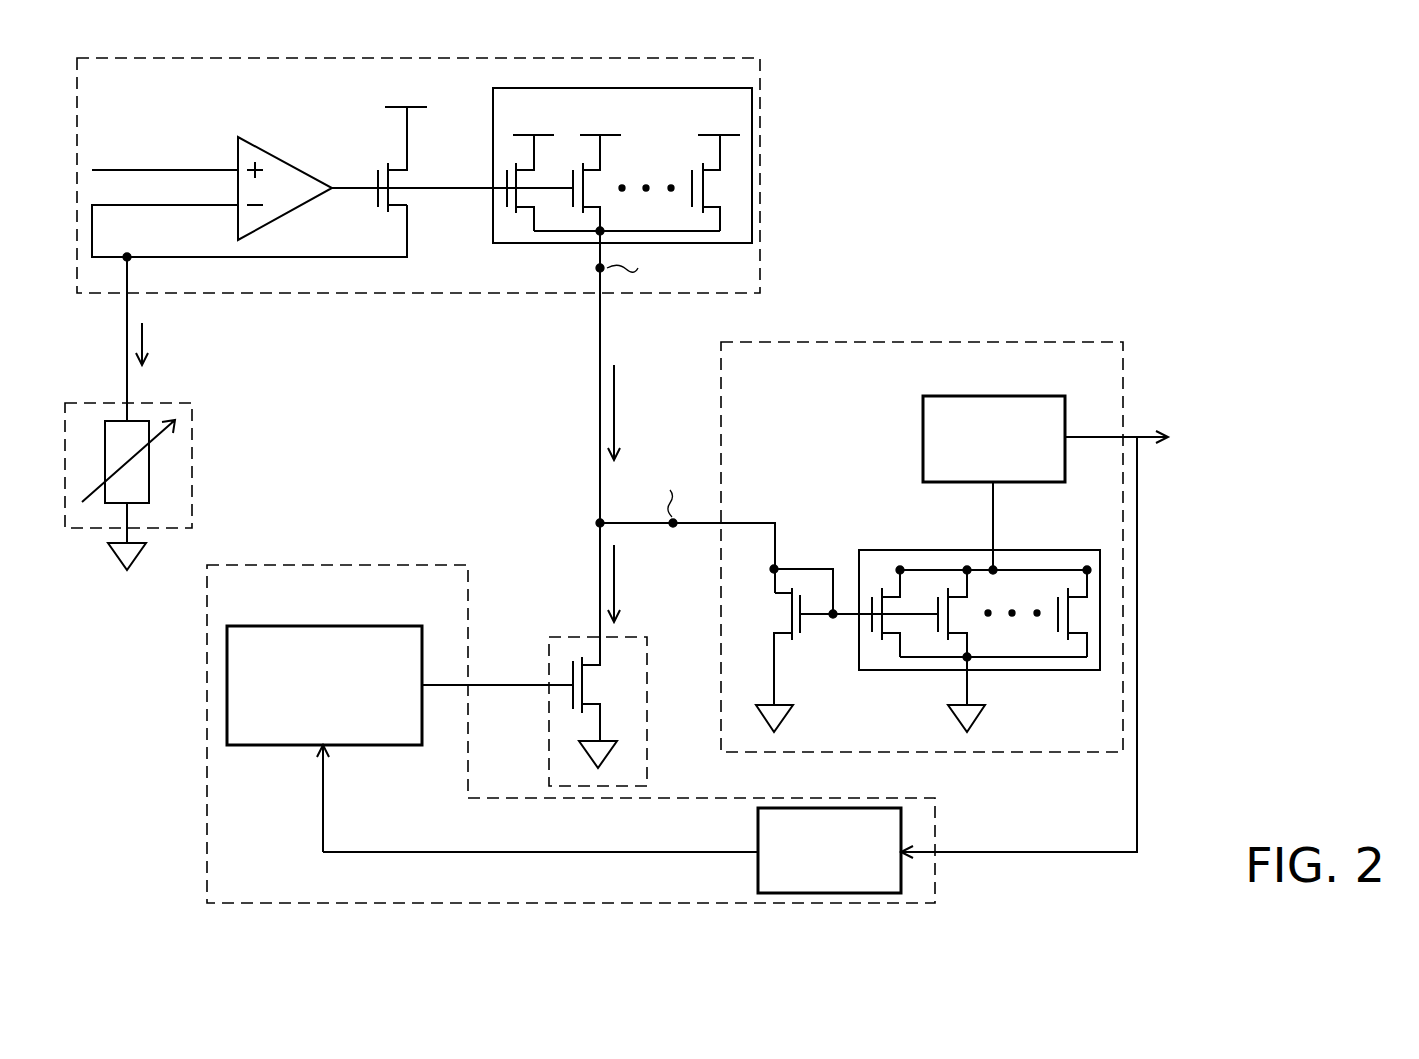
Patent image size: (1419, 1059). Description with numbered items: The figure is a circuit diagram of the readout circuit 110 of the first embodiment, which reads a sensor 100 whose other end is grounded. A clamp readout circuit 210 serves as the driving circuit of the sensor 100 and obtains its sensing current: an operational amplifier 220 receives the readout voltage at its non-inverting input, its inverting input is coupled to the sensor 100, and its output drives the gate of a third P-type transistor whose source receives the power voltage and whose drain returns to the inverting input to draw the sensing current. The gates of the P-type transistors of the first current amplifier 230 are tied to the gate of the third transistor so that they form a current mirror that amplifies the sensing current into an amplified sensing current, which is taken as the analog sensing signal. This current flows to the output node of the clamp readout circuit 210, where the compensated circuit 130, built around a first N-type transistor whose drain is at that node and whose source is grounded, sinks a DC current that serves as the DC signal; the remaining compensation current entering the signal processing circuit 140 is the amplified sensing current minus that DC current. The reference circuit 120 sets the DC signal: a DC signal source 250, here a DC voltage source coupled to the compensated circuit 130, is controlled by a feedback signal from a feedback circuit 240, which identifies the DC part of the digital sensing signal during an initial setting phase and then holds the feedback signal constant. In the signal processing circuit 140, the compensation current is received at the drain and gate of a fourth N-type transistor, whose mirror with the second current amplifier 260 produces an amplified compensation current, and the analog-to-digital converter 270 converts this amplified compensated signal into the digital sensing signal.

The readout circuit 110 is at (118, 885).
The sensor 100 is at (80, 528).
The reference circuit 120 is at (207, 673).
The compensated circuit 130 is at (647, 702).
The signal processing circuit 140 is at (997, 342).
The clamp readout circuit 210 is at (207, 58).
The operational amplifier 220 is at (300, 167).
The first current amplifier 230 is at (493, 222).
The feedback circuit 240 is at (758, 873).
The DC signal source 250 is at (360, 626).
The second current amplifier 260 is at (1037, 548).
The analog-to-digital converter 270 is at (1023, 396).